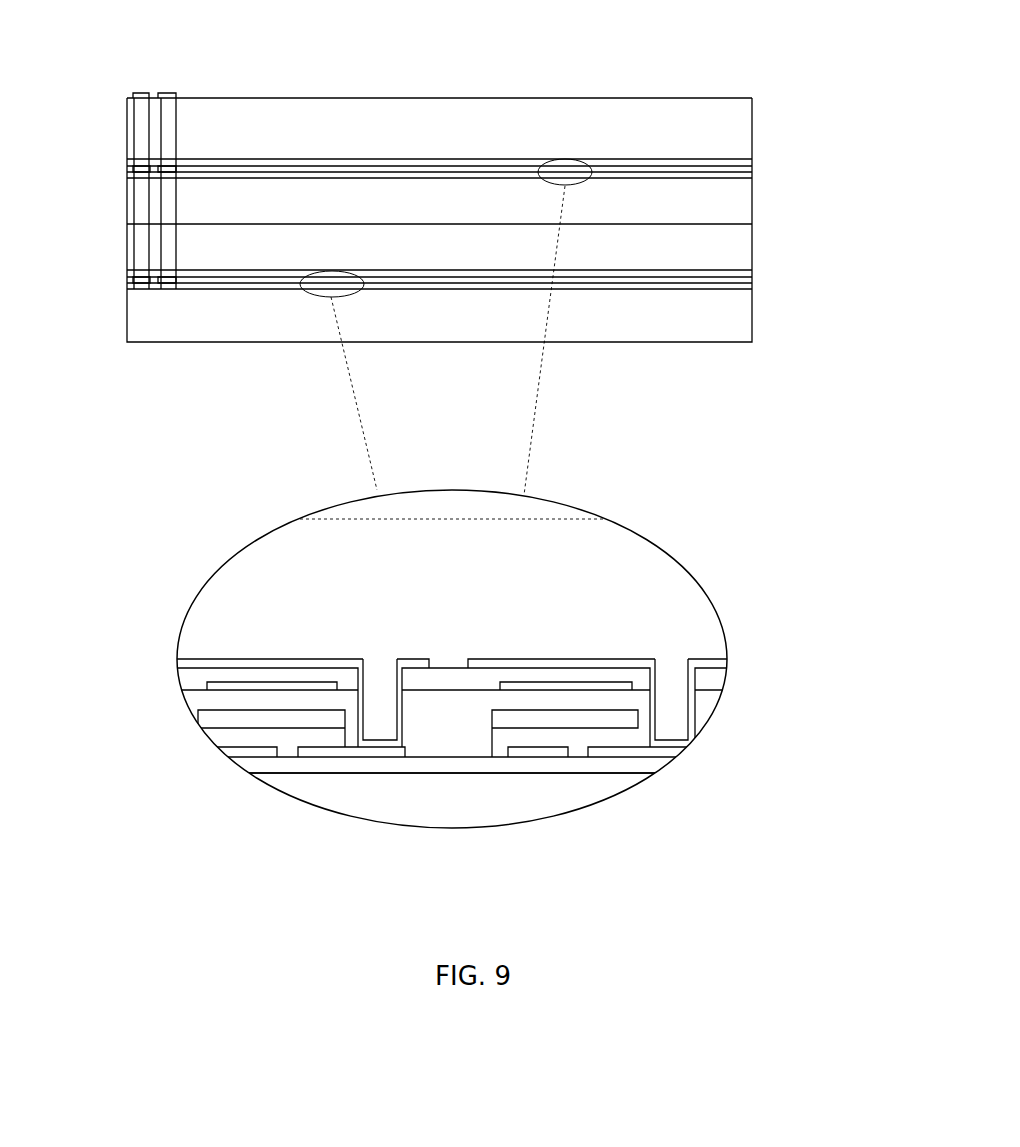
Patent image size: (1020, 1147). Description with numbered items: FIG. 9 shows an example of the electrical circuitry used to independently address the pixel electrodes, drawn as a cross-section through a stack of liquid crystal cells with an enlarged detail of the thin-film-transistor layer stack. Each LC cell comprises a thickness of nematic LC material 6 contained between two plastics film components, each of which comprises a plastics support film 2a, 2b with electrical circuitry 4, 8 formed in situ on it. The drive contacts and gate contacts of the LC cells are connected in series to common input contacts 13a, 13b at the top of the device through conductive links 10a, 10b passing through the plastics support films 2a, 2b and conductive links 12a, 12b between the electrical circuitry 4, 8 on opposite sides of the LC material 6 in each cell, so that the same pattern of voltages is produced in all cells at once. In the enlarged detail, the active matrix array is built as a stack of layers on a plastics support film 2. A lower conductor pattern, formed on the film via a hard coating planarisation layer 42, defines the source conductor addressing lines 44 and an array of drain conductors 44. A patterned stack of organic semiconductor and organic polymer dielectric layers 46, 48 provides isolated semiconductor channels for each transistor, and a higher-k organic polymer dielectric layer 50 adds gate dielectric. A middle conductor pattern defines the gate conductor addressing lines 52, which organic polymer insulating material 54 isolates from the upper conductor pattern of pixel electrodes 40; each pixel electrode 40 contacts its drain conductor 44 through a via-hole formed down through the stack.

The plastics support film 2 is at (527, 800).
The plastics support film 2a is at (735, 127).
The plastics support film 2b is at (738, 200).
The electrical circuitry 4 is at (752, 160).
The nematic LC material 6 is at (752, 167).
The electrical circuitry 8 is at (752, 174).
The conductive link 10a is at (145, 127).
The conductive link 10b is at (167, 120).
The conductive link 12a is at (133, 168).
The conductive link 12b is at (172, 170).
The common input contact 13a is at (143, 92).
The common input contact 13b is at (172, 92).
The pixel electrode 40 is at (390, 743).
The hard coating planarisation layer 42 is at (653, 757).
The source conductor addressing lines and drain conductors 44 is at (253, 750).
The organic semiconductor layer 46 is at (288, 746).
The organic polymer dielectric layer 48 is at (322, 720).
The organic polymer dielectric layer 50 is at (463, 742).
The gate conductor addressing line 52 is at (238, 685).
The organic polymer insulating material 54 is at (185, 673).